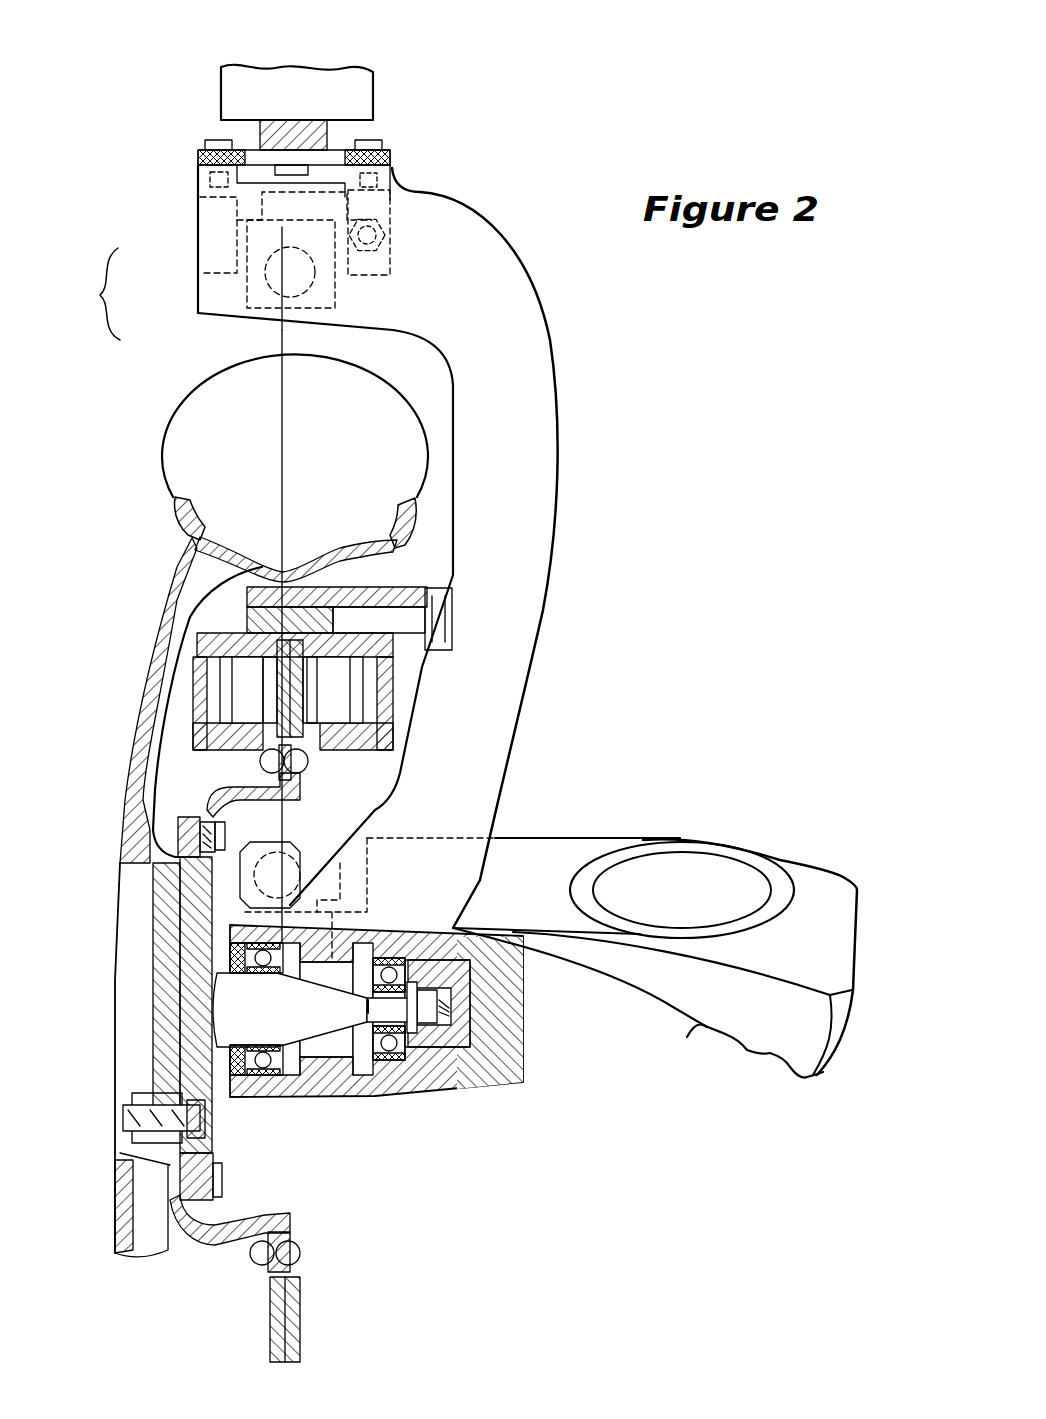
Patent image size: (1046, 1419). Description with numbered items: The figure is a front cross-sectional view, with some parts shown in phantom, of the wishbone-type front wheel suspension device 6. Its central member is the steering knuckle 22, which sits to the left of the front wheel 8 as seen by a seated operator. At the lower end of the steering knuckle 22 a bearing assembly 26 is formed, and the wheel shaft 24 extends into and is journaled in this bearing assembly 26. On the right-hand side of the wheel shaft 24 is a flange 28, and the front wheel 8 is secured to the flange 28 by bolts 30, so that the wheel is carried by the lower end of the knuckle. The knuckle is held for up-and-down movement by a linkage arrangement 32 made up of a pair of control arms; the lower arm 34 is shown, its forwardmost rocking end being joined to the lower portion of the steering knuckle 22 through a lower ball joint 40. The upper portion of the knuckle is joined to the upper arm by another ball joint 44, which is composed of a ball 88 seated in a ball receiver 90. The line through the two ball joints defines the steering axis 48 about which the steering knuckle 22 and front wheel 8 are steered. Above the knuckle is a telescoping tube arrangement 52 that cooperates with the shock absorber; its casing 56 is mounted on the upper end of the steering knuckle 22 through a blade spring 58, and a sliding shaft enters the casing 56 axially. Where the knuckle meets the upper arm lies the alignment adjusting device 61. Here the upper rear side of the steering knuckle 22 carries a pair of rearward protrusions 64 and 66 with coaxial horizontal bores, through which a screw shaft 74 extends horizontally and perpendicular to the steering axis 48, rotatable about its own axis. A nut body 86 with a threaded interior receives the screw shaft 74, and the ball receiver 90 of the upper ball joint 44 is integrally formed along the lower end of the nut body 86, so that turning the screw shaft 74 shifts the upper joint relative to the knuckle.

The front wheel suspension device 6 is at (578, 192).
The front wheel 8 is at (131, 778).
The steering knuckle 22 is at (558, 432).
The wheel shaft 24 is at (320, 988).
The bearing assembly 26 is at (373, 1030).
The flange 28 is at (178, 871).
The bolts 30 is at (123, 1119).
The linkage arrangement 32 is at (818, 866).
The lower arm 34 is at (540, 843).
The ball joint 40 is at (288, 852).
The ball joint 44 is at (91, 294).
The steering axis 48 is at (281, 392).
The telescoping tube arrangement 52 is at (375, 86).
The casing 56 is at (362, 102).
The blade spring 58 is at (243, 150).
The alignment adjusting device 61 is at (393, 218).
The rearward protrusion 64 is at (393, 256).
The rearward protrusion 66 is at (203, 237).
The screw shaft 74 is at (320, 230).
The nut body 86 is at (255, 205).
The ball 88 is at (273, 293).
The ball receiver 90 is at (247, 288).